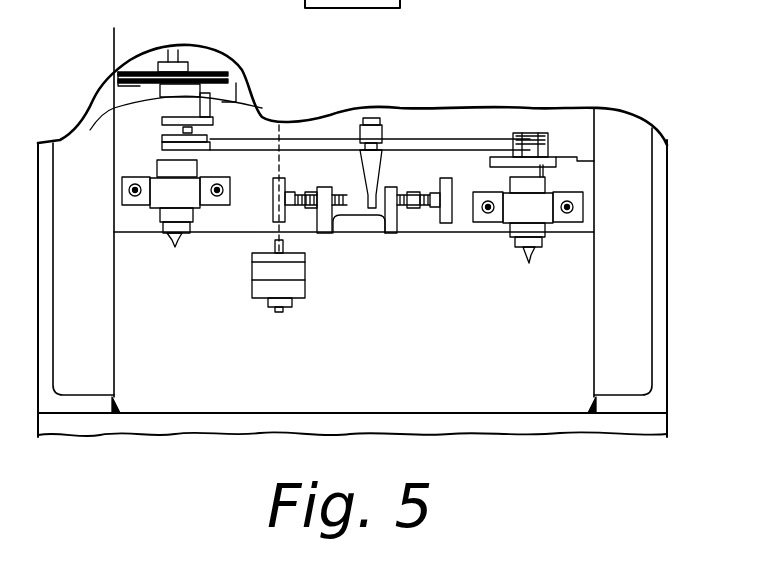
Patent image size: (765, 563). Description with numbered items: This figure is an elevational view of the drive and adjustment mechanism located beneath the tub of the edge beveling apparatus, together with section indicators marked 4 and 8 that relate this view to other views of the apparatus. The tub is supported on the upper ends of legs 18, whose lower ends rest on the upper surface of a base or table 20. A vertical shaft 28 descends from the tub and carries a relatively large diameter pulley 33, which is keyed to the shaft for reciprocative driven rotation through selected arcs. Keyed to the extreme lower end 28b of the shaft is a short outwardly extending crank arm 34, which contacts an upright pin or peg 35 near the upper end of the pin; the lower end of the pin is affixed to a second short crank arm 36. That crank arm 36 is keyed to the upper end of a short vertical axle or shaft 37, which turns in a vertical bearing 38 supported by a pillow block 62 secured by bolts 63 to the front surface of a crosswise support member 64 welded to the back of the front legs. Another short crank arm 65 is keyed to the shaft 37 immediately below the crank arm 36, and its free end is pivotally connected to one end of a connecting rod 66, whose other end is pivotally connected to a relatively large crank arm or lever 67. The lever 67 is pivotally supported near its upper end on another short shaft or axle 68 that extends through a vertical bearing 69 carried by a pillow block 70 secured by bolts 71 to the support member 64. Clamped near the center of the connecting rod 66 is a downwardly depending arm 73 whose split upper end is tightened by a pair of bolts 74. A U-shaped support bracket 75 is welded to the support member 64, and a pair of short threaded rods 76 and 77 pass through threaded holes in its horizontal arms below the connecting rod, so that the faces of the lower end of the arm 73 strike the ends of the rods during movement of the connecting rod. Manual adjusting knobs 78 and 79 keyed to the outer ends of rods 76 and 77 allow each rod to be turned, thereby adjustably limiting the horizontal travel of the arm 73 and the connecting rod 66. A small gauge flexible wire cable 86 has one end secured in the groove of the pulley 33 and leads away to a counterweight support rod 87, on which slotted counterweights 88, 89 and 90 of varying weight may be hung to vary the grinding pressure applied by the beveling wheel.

The section line 4- 4 is at (36, 130).
The section line 8- 8 is at (148, 38).
The legs 18 is at (91, 330).
The base, platform or table 20 is at (181, 423).
The shaft 28 is at (172, 50).
The extreme lower end of shaft 28b is at (352, 103).
The pulley 33 is at (202, 72).
The crank arm 34 is at (172, 94).
The pin or peg 35 is at (240, 98).
The crank arm 36 is at (212, 110).
The axle or shaft 37 is at (178, 247).
The bearing 38 is at (160, 216).
The pillow block 62 is at (160, 195).
The bolts 63 is at (128, 193).
The crosswise support member 64 is at (462, 222).
The crank arm 65 is at (165, 150).
The connecting rod 66 is at (463, 148).
The crank arm or lever 67 is at (548, 157).
The shaft or axle 68 is at (529, 263).
The bearing 69 is at (535, 182).
The pillow block 70 is at (537, 207).
The bolts 71 is at (573, 207).
The arm 73 is at (383, 135).
The bolts 74 is at (368, 118).
The U-shaped support bracket 75 is at (390, 218).
The threaded rod 76 is at (345, 188).
The threaded rod 77 is at (418, 192).
The adjusting knob 78 is at (270, 202).
The adjusting knob 79 is at (447, 182).
The wire cable 86 is at (238, 72).
The counterweight support rod 87 is at (284, 245).
The counterweight 88 is at (295, 290).
The counterweight 89 is at (300, 270).
The counterweight 90 is at (300, 258).